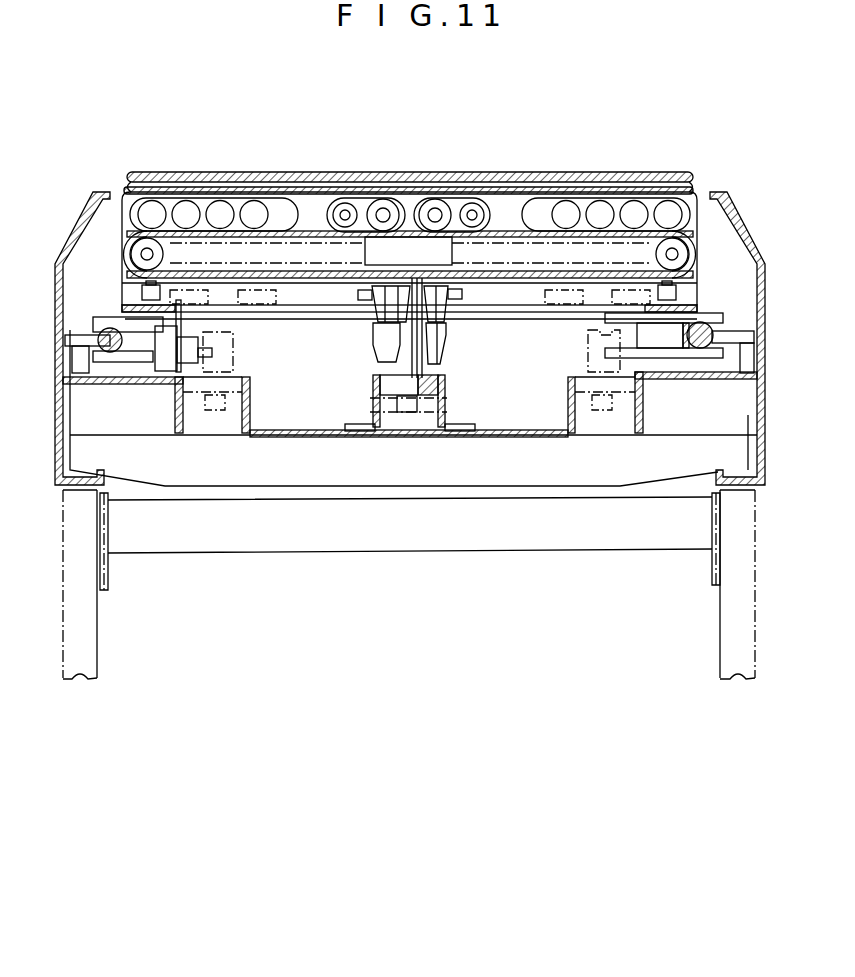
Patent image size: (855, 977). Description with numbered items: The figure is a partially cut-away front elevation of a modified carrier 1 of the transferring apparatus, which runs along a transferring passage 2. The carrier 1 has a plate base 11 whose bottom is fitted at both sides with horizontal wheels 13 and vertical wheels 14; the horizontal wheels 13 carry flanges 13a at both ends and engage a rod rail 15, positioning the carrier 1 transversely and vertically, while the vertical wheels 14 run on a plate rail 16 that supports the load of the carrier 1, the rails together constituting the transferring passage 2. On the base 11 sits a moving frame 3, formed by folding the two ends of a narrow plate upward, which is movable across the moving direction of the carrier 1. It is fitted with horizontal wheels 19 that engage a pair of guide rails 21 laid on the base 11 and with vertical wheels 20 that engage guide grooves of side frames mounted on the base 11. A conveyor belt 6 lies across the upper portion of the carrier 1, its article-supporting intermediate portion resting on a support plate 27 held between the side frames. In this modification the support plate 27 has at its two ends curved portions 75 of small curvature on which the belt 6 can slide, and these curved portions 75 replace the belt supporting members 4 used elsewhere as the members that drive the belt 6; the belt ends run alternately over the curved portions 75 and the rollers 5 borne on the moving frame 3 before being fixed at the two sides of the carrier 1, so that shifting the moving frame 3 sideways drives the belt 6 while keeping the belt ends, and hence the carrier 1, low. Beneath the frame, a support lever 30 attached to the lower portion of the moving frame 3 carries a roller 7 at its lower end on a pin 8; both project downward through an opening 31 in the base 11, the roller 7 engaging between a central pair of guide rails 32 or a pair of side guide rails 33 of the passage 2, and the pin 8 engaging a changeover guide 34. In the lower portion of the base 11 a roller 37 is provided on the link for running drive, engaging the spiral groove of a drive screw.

The carrier 1 is at (607, 96).
The transferring passage 2 is at (290, 580).
The moving frame 3 is at (442, 251).
The belt supporting member 4 is at (137, 248).
The roller 5 is at (432, 204).
The conveyor belt 6 is at (273, 172).
The roller 7 is at (387, 383).
The pin 8 is at (420, 401).
The base 11 is at (682, 311).
The horizontal wheel 13 is at (132, 337).
The flange 13a is at (590, 352).
The vertical wheel 14 is at (151, 384).
The rod rail 15 is at (108, 336).
The plate rail 16 is at (102, 382).
The horizontal wheel 19 is at (372, 300).
The vertical wheel 20 is at (352, 200).
The guide rail 21 is at (305, 301).
The support plate 27 is at (322, 186).
The support lever 30 is at (398, 353).
The opening 31 is at (481, 306).
The guide rail 32 is at (383, 425).
The guide rail 33 is at (188, 418).
The changeover guide 34 is at (487, 417).
The roller 37 is at (441, 350).
The curved portion 75 is at (140, 188).